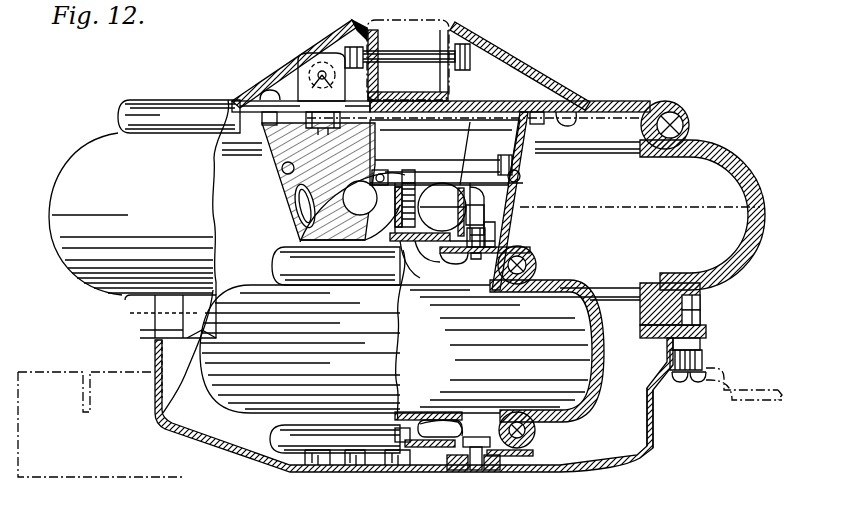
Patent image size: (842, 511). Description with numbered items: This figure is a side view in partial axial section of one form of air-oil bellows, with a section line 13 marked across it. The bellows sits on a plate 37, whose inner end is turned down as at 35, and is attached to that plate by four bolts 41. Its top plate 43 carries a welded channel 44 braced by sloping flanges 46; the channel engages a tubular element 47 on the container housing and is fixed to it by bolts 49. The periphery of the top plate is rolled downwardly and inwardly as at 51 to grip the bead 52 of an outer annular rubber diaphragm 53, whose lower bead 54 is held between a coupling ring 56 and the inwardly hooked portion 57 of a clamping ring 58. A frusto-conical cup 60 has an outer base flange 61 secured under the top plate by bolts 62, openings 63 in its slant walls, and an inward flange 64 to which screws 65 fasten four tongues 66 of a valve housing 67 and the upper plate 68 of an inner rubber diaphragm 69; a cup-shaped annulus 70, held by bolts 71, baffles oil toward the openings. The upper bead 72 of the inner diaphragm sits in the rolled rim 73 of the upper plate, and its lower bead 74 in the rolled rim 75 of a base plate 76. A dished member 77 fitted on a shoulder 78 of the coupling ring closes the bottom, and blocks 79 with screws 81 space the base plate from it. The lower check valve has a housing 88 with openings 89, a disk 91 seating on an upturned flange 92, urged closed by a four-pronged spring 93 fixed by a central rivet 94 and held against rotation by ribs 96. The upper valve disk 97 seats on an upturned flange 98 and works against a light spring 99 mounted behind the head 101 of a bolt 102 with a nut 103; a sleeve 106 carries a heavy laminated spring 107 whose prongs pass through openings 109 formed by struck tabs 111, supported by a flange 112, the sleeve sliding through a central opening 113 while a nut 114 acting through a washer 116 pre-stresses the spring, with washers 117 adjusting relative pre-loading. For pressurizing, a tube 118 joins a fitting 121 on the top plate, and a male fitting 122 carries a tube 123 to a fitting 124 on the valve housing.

The section line 13- 13 is at (235, 172).
The turned-down inner end of plate 35 is at (80, 392).
The plate 37 is at (766, 392).
The bolts 41 is at (704, 314).
The top plate 43 is at (628, 101).
The channel 44 is at (450, 80).
The sloping flanges 46 is at (252, 86).
The tubular element 47 is at (420, 22).
The bolts 49 is at (400, 54).
The rolled periphery of top plate 51 is at (690, 126).
The bead 52 is at (680, 106).
The outer annular rubber diaphragm 53 is at (757, 178).
The lower bead 54 is at (702, 302).
The coupling ring 56 is at (706, 331).
The inwardly hooked portion 57 is at (674, 283).
The clamping ring 58 is at (702, 319).
The cup 60 is at (514, 178).
The outer base flange 61 is at (570, 118).
The bolts 62 is at (265, 128).
The openings 63 is at (345, 211).
The inward flange 64 is at (470, 282).
The screws 65 is at (478, 258).
The tongues 66 is at (500, 237).
The valve housing 67 is at (458, 209).
The upper plate 68 is at (506, 248).
The inner rubber diaphragm 69 is at (588, 313).
The cup-shaped annulus 70 is at (455, 176).
The bolts 71 is at (497, 164).
The upper bead 72 is at (533, 250).
The rolled rim 73 is at (537, 266).
The lower bead 74 is at (536, 430).
The rolled rim 75 is at (534, 440).
The base plate 76 is at (526, 446).
The dished member 77 is at (656, 418).
The shoulder 78 is at (700, 350).
The blocks 79 is at (290, 455).
The screws 81 is at (486, 438).
The housing 88 is at (432, 412).
The openings 89 is at (466, 430).
The disk 91 is at (430, 455).
The upturned flange 92 is at (472, 452).
The four-pronged spring 93 is at (420, 412).
The central rivet 94 is at (408, 426).
The ribs 96 is at (448, 412).
The disk 97 is at (432, 258).
The upturned flange 98 is at (450, 253).
The light spring 99 is at (392, 237).
The head 101 is at (405, 250).
The bolt 102 is at (416, 171).
The nut 103 is at (330, 222).
The sleeve 106 is at (360, 180).
The heavy laminated spring 107 is at (440, 172).
The openings 109 is at (458, 190).
The tabs 111 is at (478, 178).
The flange 112 is at (490, 235).
The central opening 113 is at (388, 168).
The nut 114 is at (446, 199).
The washer 116 is at (442, 190).
The washers 117 is at (412, 254).
The tube 118 is at (328, 52).
The fitting 121 is at (300, 88).
The male fitting 122 is at (284, 167).
The tube 123 is at (300, 182).
The fitting 124 is at (300, 203).